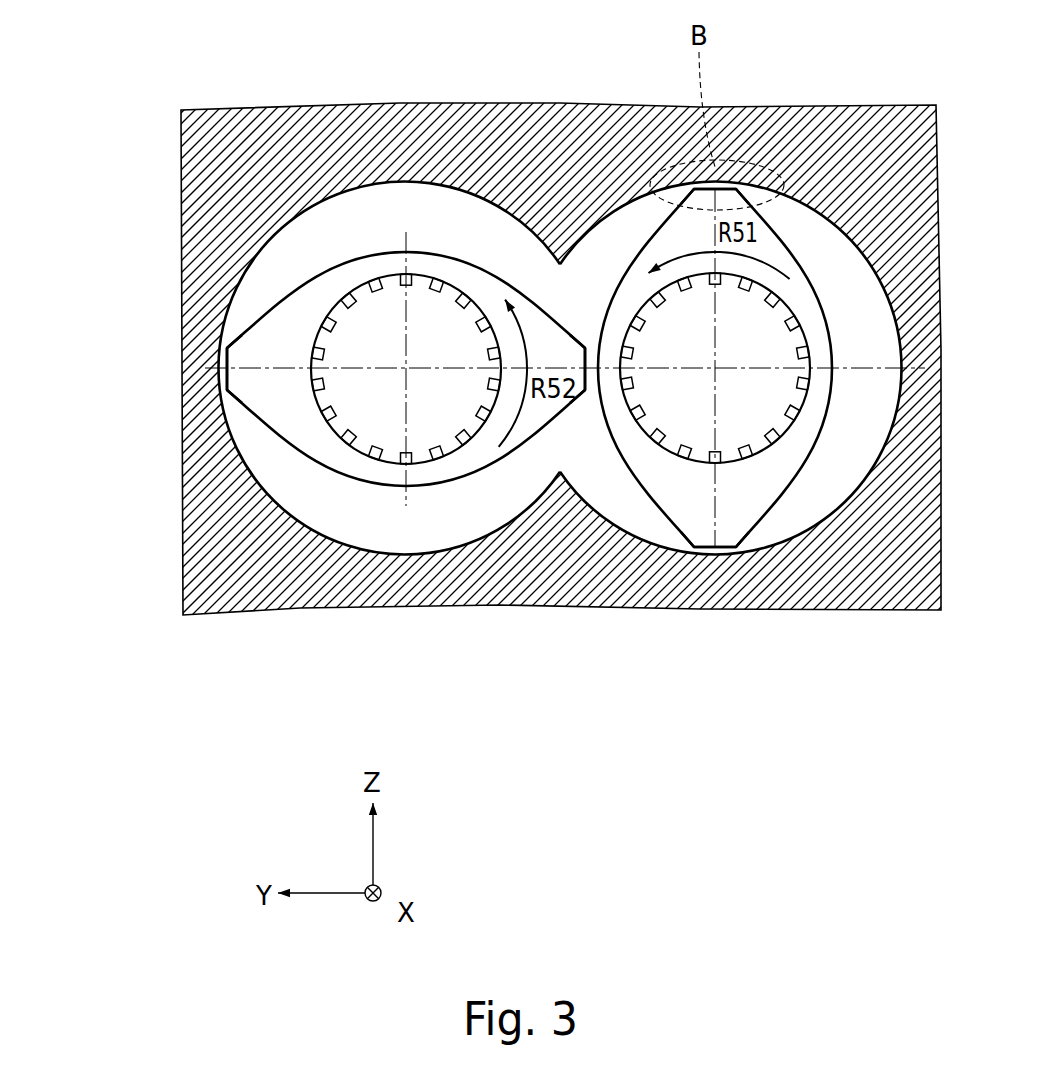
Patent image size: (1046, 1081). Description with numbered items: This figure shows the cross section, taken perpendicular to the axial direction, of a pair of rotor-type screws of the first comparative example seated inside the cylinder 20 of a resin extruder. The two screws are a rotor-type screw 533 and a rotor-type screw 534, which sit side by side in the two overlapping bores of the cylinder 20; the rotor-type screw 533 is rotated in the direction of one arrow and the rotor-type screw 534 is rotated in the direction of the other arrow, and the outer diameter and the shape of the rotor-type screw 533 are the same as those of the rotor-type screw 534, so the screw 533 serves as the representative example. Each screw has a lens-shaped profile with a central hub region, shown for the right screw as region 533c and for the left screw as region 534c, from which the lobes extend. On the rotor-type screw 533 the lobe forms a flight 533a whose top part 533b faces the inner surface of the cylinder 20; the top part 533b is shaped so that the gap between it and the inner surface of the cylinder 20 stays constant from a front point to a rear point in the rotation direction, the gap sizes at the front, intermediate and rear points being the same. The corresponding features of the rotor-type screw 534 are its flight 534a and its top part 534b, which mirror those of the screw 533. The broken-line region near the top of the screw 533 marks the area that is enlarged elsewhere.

The cylinder 20 is at (492, 108).
The rotor-type screw 533 is at (790, 508).
The flight 533a is at (740, 196).
The top part 533b is at (723, 190).
The second rotor shaft ring 533c is at (620, 378).
The rotor-type screw 534 is at (313, 500).
The first rotor lobe end 534a is at (230, 398).
The first rotor tip flat 534b is at (223, 378).
The first rotor shaft ring 534c is at (472, 302).